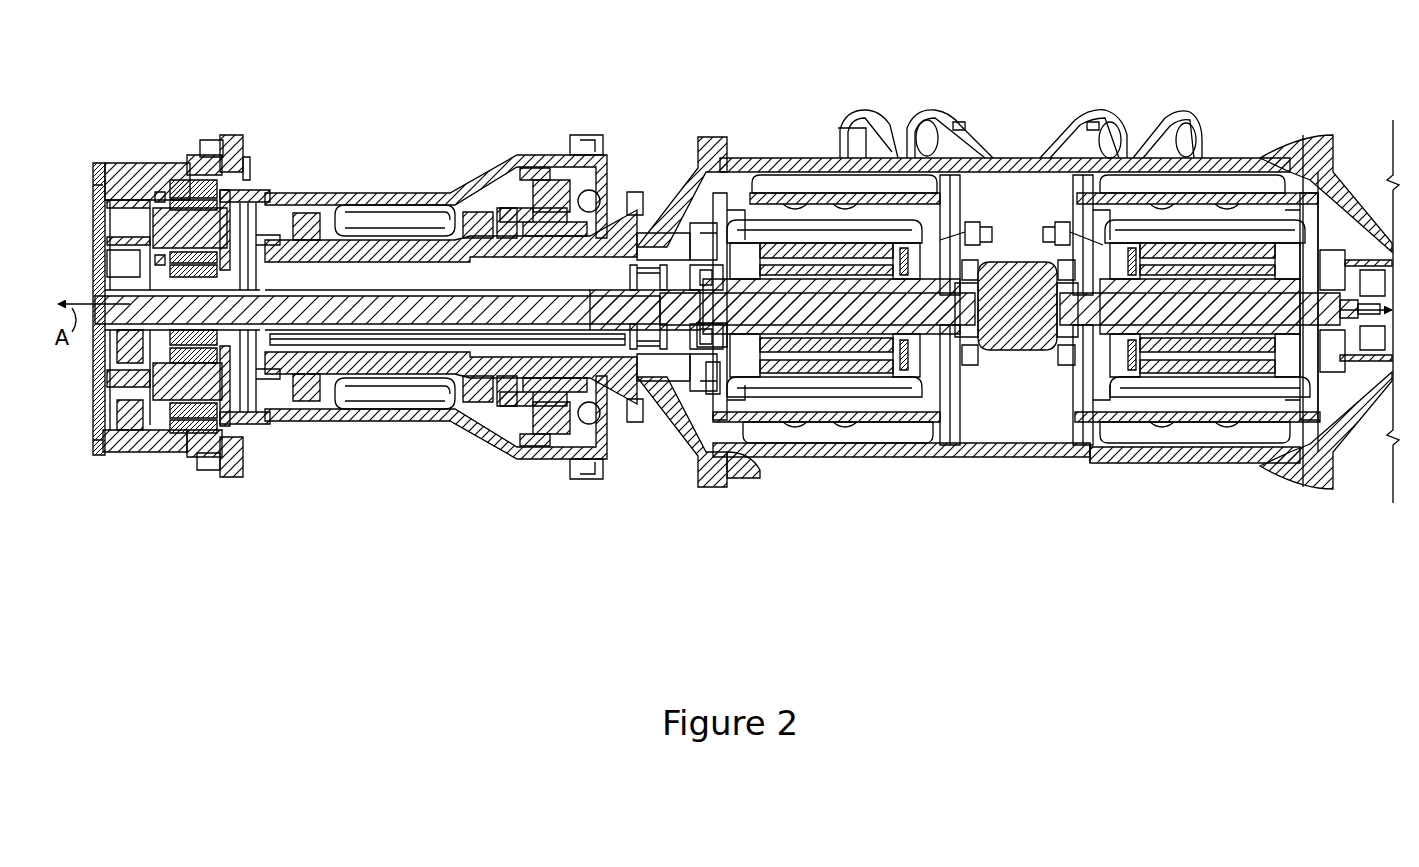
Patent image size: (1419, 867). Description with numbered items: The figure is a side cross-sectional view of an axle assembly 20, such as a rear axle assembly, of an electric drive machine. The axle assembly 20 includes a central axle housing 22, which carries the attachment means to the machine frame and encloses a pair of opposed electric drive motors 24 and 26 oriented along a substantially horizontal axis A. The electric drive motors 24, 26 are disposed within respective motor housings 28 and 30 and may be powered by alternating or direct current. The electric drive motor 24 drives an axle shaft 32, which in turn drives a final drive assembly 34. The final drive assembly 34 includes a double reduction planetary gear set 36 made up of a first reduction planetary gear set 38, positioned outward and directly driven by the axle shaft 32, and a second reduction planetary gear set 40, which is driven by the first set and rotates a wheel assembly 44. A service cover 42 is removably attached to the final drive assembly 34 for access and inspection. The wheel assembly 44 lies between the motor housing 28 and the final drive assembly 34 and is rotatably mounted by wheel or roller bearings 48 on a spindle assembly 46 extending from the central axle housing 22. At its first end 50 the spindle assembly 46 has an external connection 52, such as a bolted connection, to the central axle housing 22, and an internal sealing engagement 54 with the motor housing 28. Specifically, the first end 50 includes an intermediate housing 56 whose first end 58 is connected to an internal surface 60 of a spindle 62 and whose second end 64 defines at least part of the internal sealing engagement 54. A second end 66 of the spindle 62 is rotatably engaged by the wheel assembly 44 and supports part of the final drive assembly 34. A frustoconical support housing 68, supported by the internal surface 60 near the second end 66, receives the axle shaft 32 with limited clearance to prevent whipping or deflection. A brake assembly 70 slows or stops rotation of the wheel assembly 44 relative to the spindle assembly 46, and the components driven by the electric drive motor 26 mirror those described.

The axle assembly 20 is at (893, 66).
The central axle housing 22 is at (1020, 160).
The electric drive motor 24 is at (885, 365).
The electric drive motor 26 is at (1210, 367).
The motor housing 28 is at (855, 425).
The motor housing 30 is at (1180, 425).
The axle shaft 32 is at (465, 325).
The final drive assembly 34 is at (150, 124).
The double reduction planetary gear set 36 is at (118, 145).
The first reduction planetary gear set 38 is at (120, 454).
The second reduction planetary gear set 40 is at (170, 454).
The service cover 42 is at (88, 228).
The wheel assembly 44 is at (365, 198).
The spindle assembly 46 is at (410, 243).
The wheel or roller bearings 48 is at (320, 215).
The first end 50 is at (685, 480).
The external connection 52 is at (722, 120).
The internal sealing engagement 54 is at (700, 369).
The intermediate housing 56 is at (688, 252).
The first end 58 is at (648, 232).
The internal surface 60 is at (690, 222).
The spindle 62 is at (630, 195).
The second end 64 is at (702, 246).
The second end 66 is at (281, 482).
The support housing 68 is at (279, 226).
The brake assembly 70 is at (550, 182).